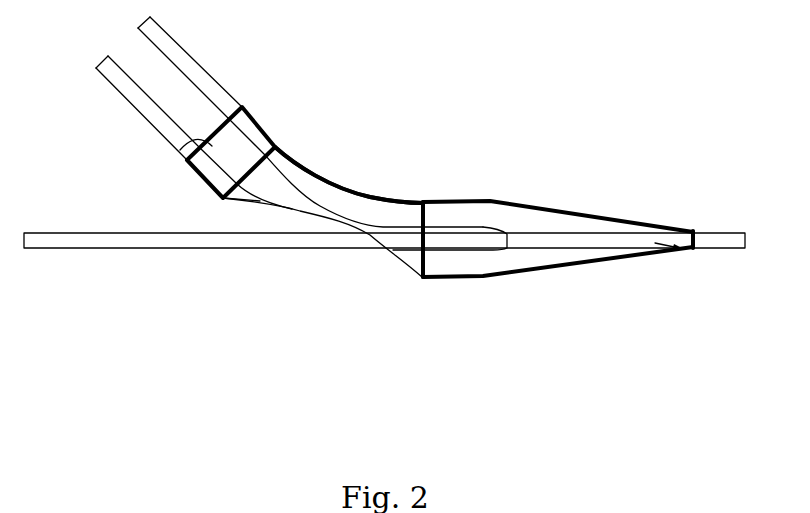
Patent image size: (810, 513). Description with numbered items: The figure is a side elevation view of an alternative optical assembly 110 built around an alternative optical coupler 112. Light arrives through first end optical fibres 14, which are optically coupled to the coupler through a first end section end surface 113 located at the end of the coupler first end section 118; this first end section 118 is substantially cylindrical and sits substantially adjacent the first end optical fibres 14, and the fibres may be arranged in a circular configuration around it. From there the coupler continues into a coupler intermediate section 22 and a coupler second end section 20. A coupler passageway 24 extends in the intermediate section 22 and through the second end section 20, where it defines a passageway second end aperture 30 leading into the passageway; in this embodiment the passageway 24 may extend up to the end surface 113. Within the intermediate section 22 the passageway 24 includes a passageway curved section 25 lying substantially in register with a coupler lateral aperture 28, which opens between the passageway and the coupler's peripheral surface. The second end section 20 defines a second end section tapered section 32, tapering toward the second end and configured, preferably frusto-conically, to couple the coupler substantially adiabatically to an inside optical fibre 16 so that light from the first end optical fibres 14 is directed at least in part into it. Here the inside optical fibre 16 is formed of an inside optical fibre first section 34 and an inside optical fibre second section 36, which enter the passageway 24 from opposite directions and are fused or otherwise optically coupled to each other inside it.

The first end optical fibre 14 is at (153, 30).
The inside optical fibre 16 is at (85, 243).
The coupler second end section 20 is at (702, 208).
The coupler intermediate section 22 is at (437, 172).
The passageway curved section 25 is at (437, 172).
The coupler passageway 24 is at (372, 228).
The coupler lateral aperture 28 is at (403, 262).
The passageway second end aperture 30 is at (695, 230).
The second end section tapered section 32 is at (687, 272).
The inside optical fibre first section 34 is at (457, 242).
The inside optical fibre second section 36 is at (683, 250).
The optical assembly 110 is at (144, 406).
The optical coupler 112 is at (239, 205).
The first end section end surface 113 is at (180, 150).
The coupler first end section 118 is at (243, 100).